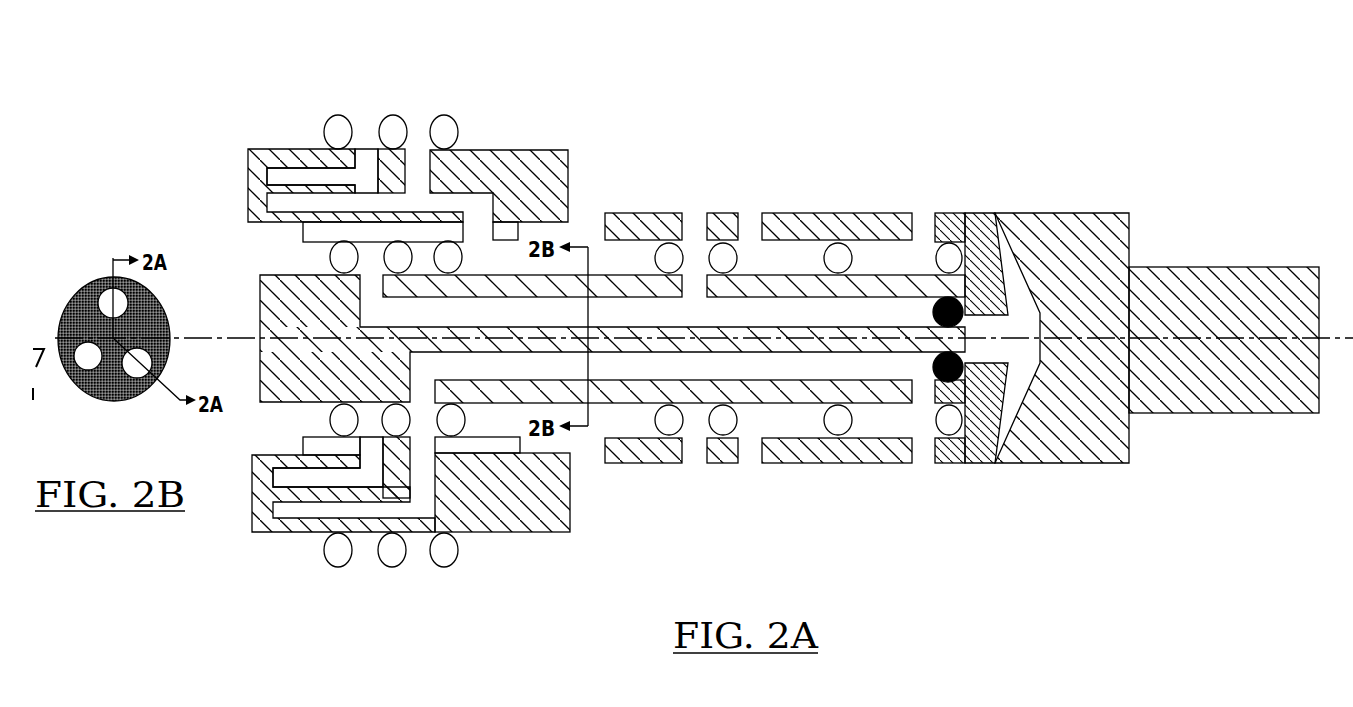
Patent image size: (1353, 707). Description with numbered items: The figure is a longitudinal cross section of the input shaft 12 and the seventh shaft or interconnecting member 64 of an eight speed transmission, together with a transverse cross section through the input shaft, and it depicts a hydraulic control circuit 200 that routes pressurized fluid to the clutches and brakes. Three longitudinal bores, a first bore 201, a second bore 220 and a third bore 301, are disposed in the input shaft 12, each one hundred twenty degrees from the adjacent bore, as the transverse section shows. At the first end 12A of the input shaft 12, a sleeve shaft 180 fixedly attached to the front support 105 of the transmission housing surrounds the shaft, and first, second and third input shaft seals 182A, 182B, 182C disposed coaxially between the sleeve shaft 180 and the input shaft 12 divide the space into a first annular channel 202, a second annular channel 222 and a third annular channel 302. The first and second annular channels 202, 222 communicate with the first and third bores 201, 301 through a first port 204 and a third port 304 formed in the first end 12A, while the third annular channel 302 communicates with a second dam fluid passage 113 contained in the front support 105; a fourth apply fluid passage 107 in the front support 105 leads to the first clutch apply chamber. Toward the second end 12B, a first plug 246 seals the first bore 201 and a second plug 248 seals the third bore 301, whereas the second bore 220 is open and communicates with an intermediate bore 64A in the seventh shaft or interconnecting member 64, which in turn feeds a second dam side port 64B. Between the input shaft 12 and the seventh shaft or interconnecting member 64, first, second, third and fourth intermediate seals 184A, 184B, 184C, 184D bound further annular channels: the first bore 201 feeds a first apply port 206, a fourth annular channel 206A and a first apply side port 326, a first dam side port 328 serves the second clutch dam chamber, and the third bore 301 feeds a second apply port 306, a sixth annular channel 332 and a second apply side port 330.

In FIG. 2A, the input shaft 12 is at (602, 405).
In FIG. 2B, the input shaft 12 is at (98, 275).
In FIG. 2A, the first end of the input shaft 12A is at (258, 397).
In FIG. 2A, the second end of the input shaft 12B is at (1040, 315).
In FIG. 2A, the seventh shaft or interconnecting member 64 is at (1190, 267).
In FIG. 2A, the intermediate bore 64A is at (993, 363).
In FIG. 2A, the second dam side port 64B is at (1008, 250).
In FIG. 2A, the front support 105 is at (248, 170).
In FIG. 2A, the fourth apply fluid passage 107 is at (357, 186).
In FIG. 2A, the second dam fluid passage 113 is at (413, 208).
In FIG. 2A, the sleeve shaft 180 is at (300, 218).
In FIG. 2A, the first input shaft seal 182A is at (345, 250).
In FIG. 2A, the second input shaft seal 182B is at (398, 252).
In FIG. 2A, the third input shaft seal 182C is at (448, 262).
In FIG. 2A, the first intermediate seal 184A is at (656, 258).
In FIG. 2A, the second intermediate seal 184B is at (836, 258).
In FIG. 2A, the third intermediate seal 184C is at (840, 268).
In FIG. 2A, the fourth intermediate seal 184D is at (945, 258).
In FIG. 2A, the hydraulic control circuit 200 is at (843, 141).
In FIG. 2A, the first bore 201 is at (600, 290).
In FIG. 2B, the first bore 201 is at (100, 300).
In FIG. 2A, the first annular channel 202 is at (333, 250).
In FIG. 2A, the first port 204 is at (586, 397).
In FIG. 2A, the first apply port 206 is at (687, 278).
In FIG. 2A, the fourth annular channel 206A is at (692, 405).
In FIG. 2B, the second bore 220 is at (84, 343).
In FIG. 2A, the second annular channel 222 is at (345, 262).
In FIG. 2A, the first plug 246 is at (1008, 252).
In FIG. 2A, the second plug 248 is at (935, 367).
In FIG. 2A, the third bore 301 is at (688, 432).
In FIG. 2B, the third bore 301 is at (138, 377).
In FIG. 2A, the third annular channel 302 is at (478, 272).
In FIG. 2A, the third port 304 is at (413, 390).
In FIG. 2A, the second apply port 306 is at (913, 398).
In FIG. 2A, the first apply side port 326 is at (695, 228).
In FIG. 2A, the first dam side port 328 is at (753, 228).
In FIG. 2A, the second apply side port 330 is at (919, 232).
In FIG. 2A, the sixth annular channel 332 is at (940, 237).